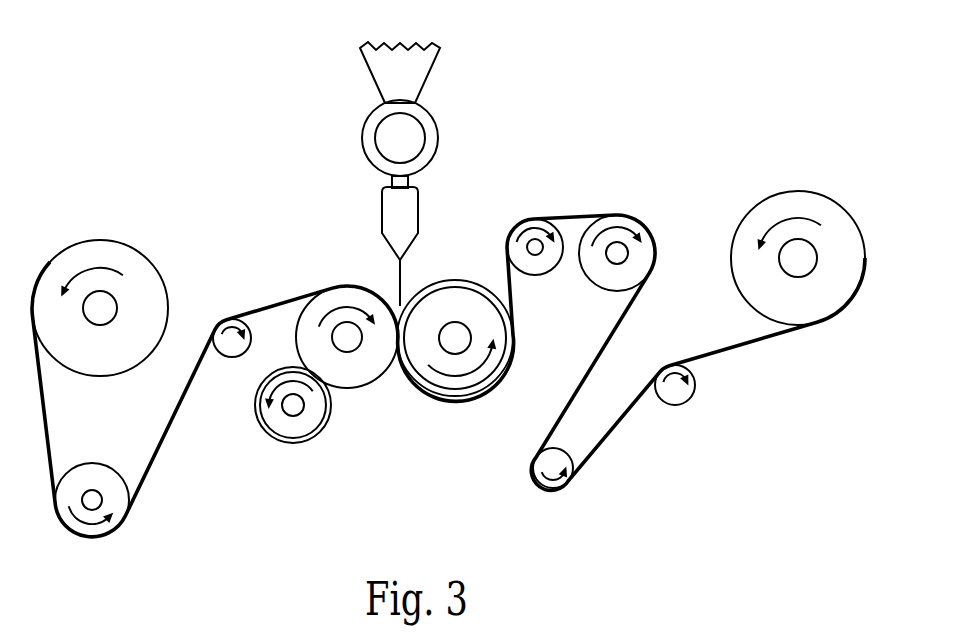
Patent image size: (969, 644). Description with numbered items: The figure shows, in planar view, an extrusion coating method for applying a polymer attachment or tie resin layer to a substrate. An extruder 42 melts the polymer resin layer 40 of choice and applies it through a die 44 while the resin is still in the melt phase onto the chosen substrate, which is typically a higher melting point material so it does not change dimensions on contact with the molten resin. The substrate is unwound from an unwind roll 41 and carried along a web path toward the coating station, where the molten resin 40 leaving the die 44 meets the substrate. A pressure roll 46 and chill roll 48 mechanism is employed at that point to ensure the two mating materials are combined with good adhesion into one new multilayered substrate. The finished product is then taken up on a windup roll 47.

The polymer resin layer 40 is at (398, 293).
The unwind roll 41 is at (110, 253).
The extruder 42 is at (410, 73).
The die 44 is at (408, 220).
The pressure roll 46 is at (363, 368).
The windup roll 47 is at (805, 205).
The chill roll 48 is at (463, 383).